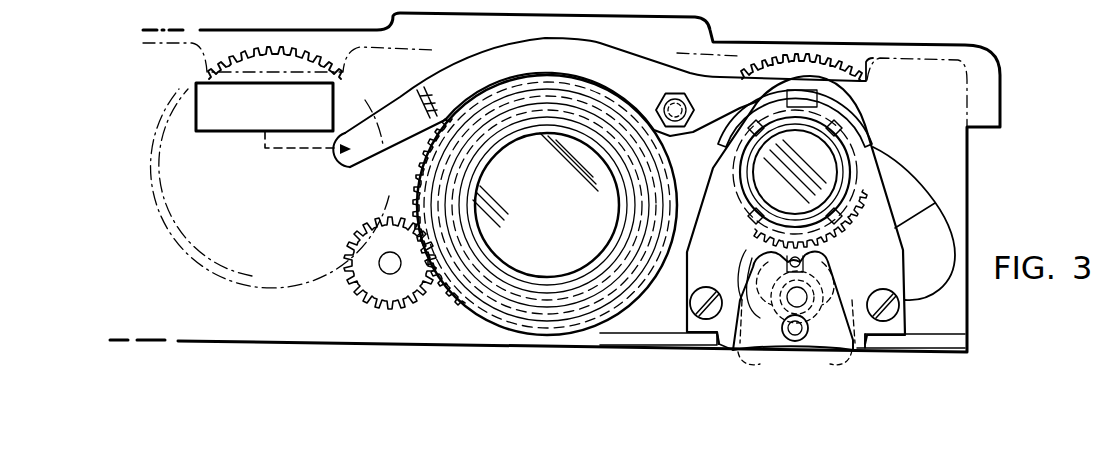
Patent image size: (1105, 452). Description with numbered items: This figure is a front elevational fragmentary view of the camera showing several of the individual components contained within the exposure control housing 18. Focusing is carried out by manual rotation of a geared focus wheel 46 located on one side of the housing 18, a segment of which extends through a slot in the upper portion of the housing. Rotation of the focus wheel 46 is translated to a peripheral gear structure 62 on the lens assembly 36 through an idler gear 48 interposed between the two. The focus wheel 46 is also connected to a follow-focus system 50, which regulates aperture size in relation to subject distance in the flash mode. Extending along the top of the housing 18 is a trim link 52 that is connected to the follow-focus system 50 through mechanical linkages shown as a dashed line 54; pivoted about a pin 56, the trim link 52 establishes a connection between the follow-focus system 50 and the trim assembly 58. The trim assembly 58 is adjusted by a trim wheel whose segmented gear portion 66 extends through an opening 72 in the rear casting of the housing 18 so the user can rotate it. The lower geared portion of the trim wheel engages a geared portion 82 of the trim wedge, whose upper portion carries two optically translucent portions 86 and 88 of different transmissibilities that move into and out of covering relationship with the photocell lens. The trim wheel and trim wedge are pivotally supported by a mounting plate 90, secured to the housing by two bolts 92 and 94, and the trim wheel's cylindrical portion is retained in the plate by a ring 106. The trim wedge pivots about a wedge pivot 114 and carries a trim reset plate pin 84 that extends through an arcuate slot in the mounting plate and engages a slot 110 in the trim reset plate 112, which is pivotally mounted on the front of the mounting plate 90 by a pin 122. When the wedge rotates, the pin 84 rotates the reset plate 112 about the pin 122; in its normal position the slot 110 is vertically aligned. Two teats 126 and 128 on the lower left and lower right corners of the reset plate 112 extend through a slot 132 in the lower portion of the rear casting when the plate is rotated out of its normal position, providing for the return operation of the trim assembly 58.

The exposure control housing 18 is at (1003, 97).
The lens assembly 36 is at (533, 181).
The focus wheel 46 is at (286, 52).
The idler gear 48 is at (372, 283).
The follow-focus system 50 is at (330, 112).
The trim link 52 is at (510, 55).
The mechanical linkages 54 is at (308, 152).
The pin 56 is at (688, 106).
The trim assembly 58 is at (897, 146).
The peripheral gear structure 62 is at (447, 250).
The segmented gear portion 66 is at (803, 60).
The opening 72 is at (868, 68).
The geared portion 82 is at (850, 252).
The trim reset plate pin 84 is at (792, 256).
The optically translucent portion 86 is at (940, 245).
The optically translucent portion 88 is at (903, 178).
The mounting plate 90 is at (872, 150).
The bolt 92 is at (689, 304).
The bolt 94 is at (900, 305).
The ring 106 is at (762, 200).
The slot 110 is at (822, 296).
The trim reset plate 112 is at (718, 344).
The wedge pivot 114 is at (760, 274).
The pin 122 is at (792, 349).
The teat 126 is at (754, 360).
The teat 128 is at (838, 360).
The slot 132 is at (874, 346).